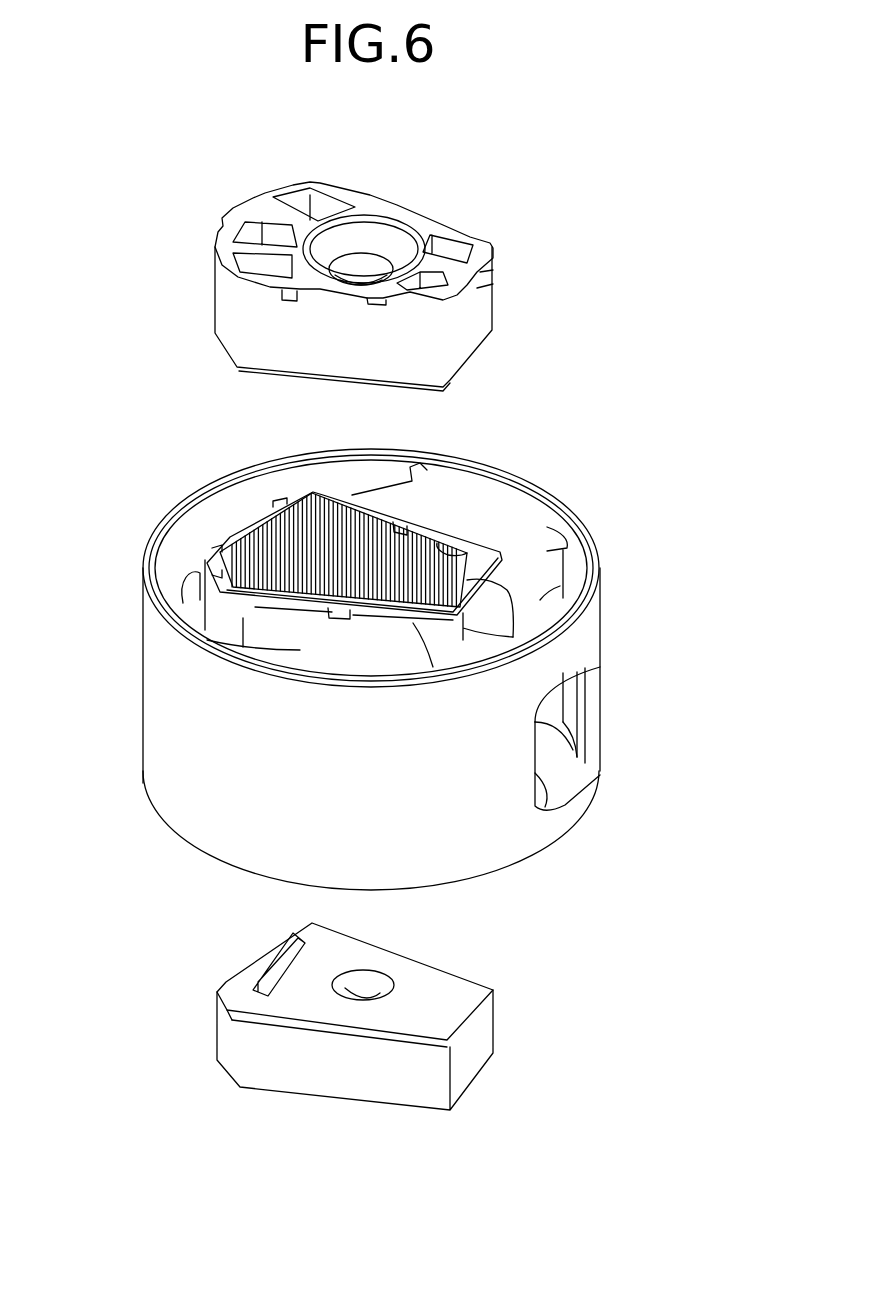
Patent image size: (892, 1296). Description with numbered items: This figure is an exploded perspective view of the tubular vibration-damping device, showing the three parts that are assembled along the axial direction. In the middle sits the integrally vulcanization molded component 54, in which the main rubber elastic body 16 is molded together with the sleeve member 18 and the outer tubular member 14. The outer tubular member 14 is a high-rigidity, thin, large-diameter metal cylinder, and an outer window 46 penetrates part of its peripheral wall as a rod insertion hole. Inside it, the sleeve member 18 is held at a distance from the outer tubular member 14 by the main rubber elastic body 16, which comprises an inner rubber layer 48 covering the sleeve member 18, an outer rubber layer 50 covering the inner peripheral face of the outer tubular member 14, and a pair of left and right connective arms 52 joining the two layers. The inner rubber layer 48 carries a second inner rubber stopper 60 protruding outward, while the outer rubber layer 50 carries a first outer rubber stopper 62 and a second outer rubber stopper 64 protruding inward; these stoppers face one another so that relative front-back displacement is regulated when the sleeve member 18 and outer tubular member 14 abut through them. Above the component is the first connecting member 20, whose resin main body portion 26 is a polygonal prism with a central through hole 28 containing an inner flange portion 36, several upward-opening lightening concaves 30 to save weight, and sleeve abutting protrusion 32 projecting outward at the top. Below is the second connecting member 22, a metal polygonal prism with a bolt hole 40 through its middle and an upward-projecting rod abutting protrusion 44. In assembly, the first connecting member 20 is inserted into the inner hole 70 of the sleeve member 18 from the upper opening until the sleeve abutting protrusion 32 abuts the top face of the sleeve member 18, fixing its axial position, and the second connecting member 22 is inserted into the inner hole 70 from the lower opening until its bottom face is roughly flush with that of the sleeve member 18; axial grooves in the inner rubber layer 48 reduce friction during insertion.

The outer tubular member 14 is at (366, 653).
The main rubber elastic body 16 is at (365, 490).
The sleeve member 18 is at (278, 500).
The first connecting member 20 is at (369, 284).
The second connecting member 22 is at (374, 1034).
The main body portion 26 is at (473, 333).
The through hole 28 is at (382, 260).
The lightening concaves 30 is at (272, 220).
The sleeve abutting protrusion 32 is at (400, 208).
The inner flange portion 36 is at (347, 247).
The bolt hole 40 is at (368, 993).
The rod abutting protrusion 44 is at (270, 963).
The outer window 46 is at (537, 777).
The inner rubber layer 48 is at (218, 548).
The outer rubber layer 50 is at (217, 492).
The connective arms 52 is at (445, 505).
The integrally vulcanization molded component 54 is at (407, 675).
The second inner rubber stopper 60 is at (500, 597).
The first outer rubber stopper 62 is at (183, 588).
The second outer rubber stopper 64 is at (550, 610).
The inner hole 70 is at (455, 555).